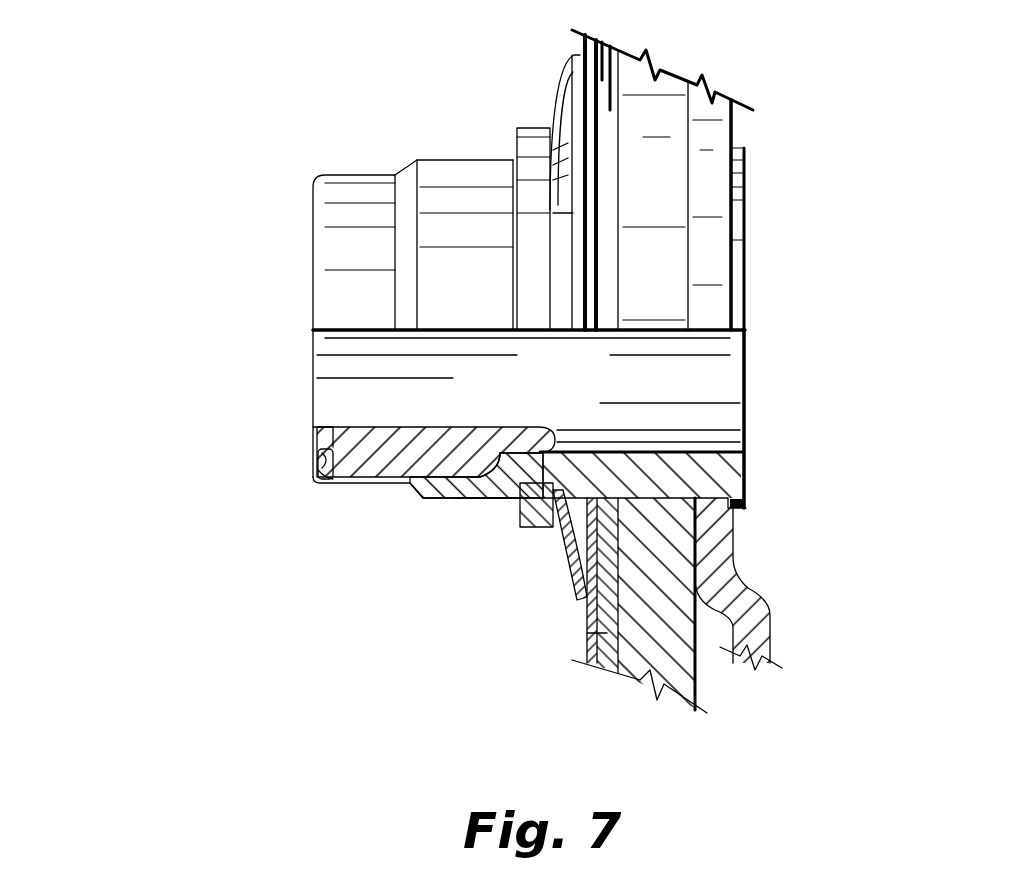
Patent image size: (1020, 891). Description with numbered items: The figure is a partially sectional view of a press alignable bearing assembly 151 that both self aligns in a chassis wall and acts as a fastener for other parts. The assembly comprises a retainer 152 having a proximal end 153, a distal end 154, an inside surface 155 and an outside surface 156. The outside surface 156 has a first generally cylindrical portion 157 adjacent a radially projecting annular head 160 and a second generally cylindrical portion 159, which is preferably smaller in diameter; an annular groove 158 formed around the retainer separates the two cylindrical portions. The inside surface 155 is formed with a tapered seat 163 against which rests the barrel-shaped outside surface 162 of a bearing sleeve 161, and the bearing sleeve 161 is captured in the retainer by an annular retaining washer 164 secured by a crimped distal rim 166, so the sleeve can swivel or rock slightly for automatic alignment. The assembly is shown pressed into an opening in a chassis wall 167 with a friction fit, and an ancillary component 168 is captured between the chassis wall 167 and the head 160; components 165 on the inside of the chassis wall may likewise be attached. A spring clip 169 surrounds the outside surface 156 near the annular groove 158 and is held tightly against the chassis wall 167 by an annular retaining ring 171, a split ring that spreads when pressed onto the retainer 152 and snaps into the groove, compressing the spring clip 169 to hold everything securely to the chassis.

The bearing assembly 151 is at (196, 183).
The retainer 152 is at (481, 188).
The proximal end 153 is at (758, 443).
The distal end 154 is at (294, 247).
The inside surface 155 is at (700, 385).
The outside surface 156 is at (471, 510).
The first generally cylindrical portion 157 is at (734, 547).
The annular groove 158 is at (537, 480).
The second generally cylindrical portion 159 is at (455, 500).
The radially projecting annular head 160 is at (746, 503).
The bearing sleeve 161 is at (310, 440).
The barrel-shaped outside surface 162 is at (420, 468).
The tapered seat 163 is at (503, 500).
The annular retaining washer 164 is at (310, 453).
The components 165 is at (586, 633).
The crimped distal rim 166 is at (317, 477).
The chassis wall 167 is at (697, 688).
The ancillary component 168 is at (773, 605).
The spring clip 169 is at (562, 565).
The annular retaining ring 171 is at (537, 530).